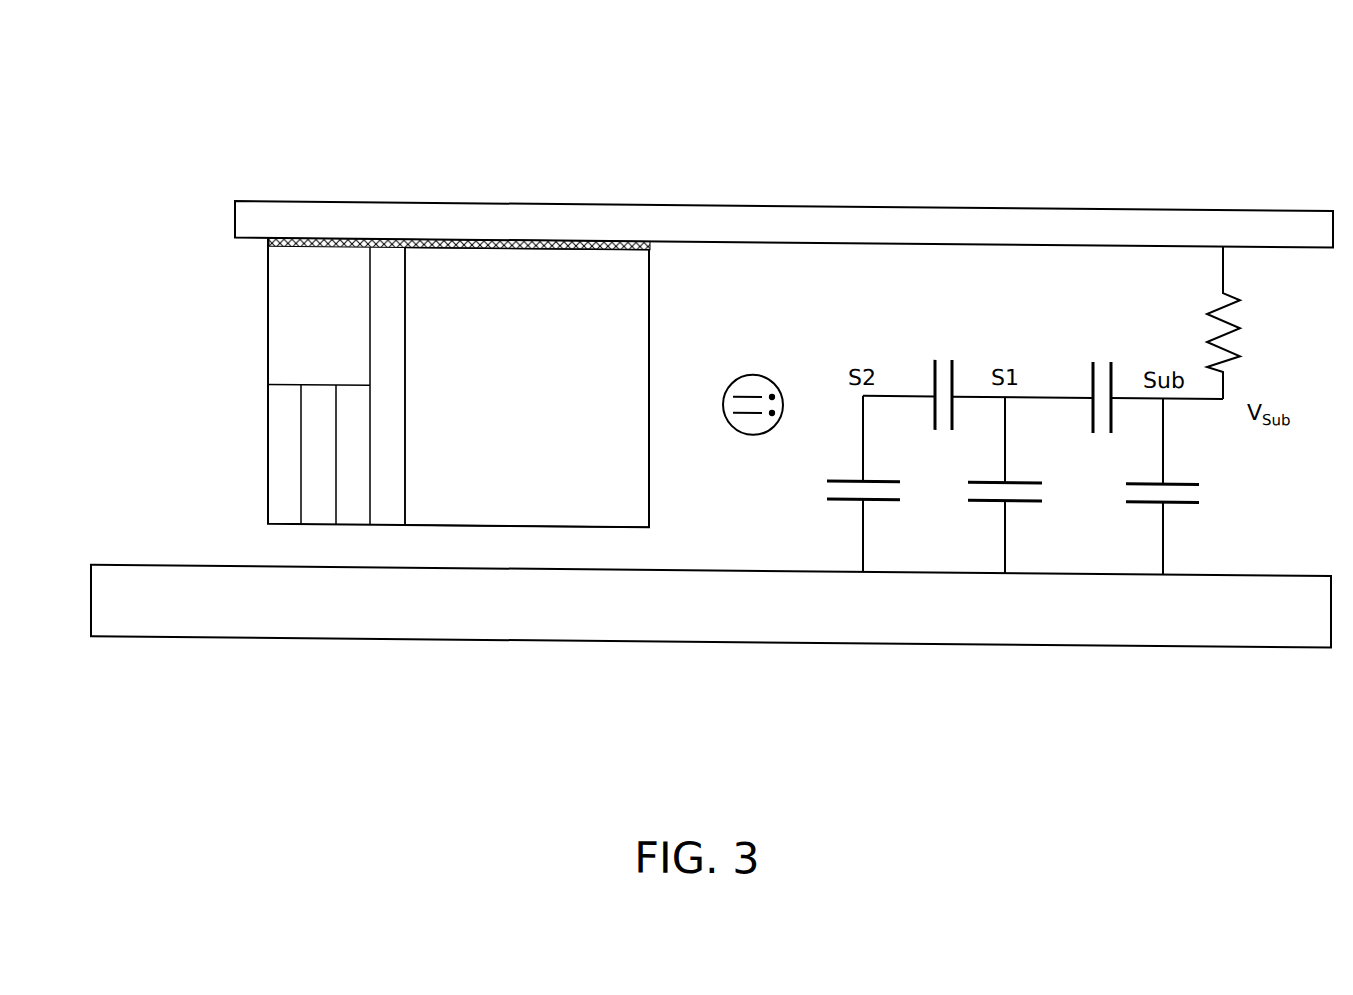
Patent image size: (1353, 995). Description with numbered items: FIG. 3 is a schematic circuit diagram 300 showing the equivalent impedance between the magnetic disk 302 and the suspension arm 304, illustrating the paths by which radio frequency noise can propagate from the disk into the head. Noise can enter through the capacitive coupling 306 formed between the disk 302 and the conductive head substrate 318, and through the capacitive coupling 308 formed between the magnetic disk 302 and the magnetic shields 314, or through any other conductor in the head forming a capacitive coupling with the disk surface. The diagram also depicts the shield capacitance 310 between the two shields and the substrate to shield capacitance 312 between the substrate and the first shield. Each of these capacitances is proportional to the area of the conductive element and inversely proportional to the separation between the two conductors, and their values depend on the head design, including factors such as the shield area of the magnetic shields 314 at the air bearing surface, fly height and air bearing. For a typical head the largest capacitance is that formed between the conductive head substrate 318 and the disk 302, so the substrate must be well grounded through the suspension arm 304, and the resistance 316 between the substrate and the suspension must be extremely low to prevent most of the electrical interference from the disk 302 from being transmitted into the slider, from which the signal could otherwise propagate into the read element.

The schematic circuit diagram 300 is at (207, 86).
The magnetic disk 302 is at (270, 603).
The suspension arm 304 is at (267, 211).
The capacitive coupling 306 is at (1203, 491).
The capacitive coupling 308 is at (992, 503).
The shield capacitance 310 is at (932, 365).
The substrate to shield capacitance 312 is at (1087, 362).
The magnetic shields 314 is at (345, 514).
The resistance 316 is at (1198, 314).
The conductive head substrate 318 is at (607, 302).